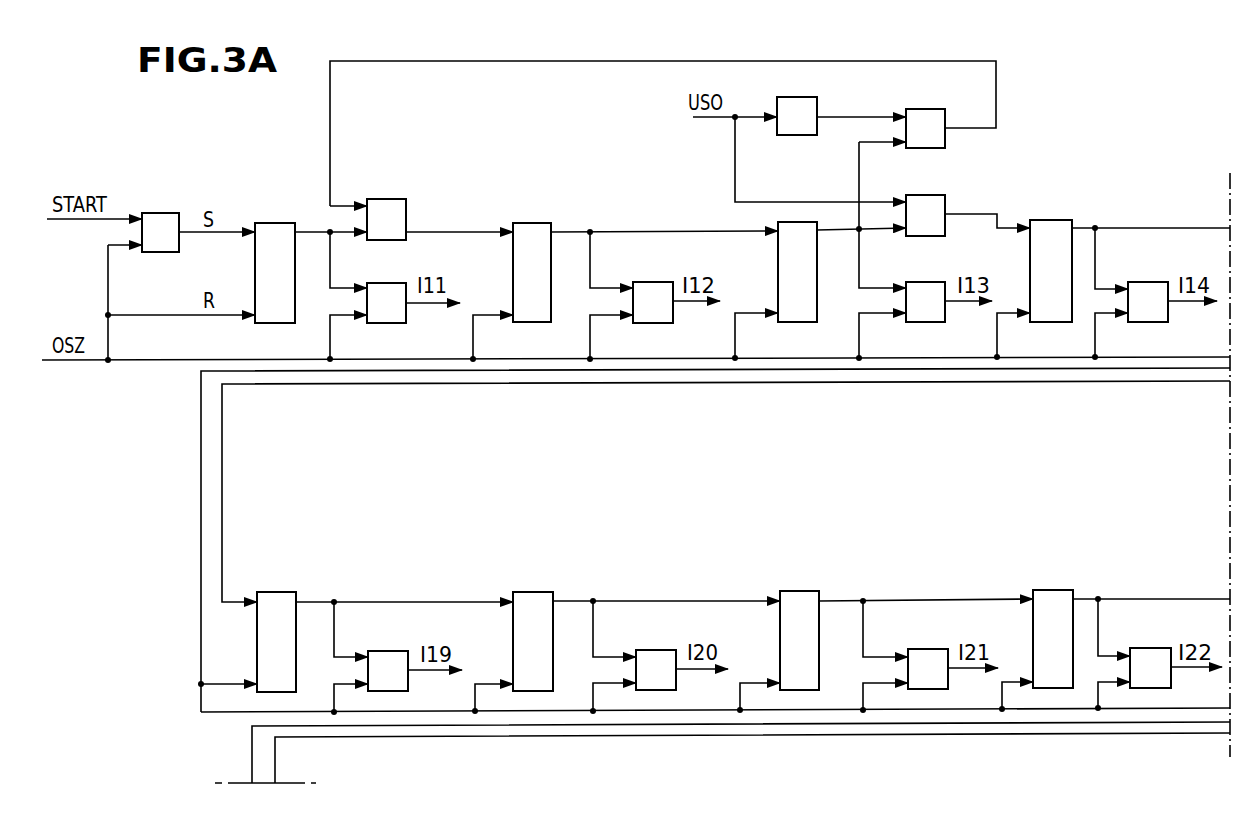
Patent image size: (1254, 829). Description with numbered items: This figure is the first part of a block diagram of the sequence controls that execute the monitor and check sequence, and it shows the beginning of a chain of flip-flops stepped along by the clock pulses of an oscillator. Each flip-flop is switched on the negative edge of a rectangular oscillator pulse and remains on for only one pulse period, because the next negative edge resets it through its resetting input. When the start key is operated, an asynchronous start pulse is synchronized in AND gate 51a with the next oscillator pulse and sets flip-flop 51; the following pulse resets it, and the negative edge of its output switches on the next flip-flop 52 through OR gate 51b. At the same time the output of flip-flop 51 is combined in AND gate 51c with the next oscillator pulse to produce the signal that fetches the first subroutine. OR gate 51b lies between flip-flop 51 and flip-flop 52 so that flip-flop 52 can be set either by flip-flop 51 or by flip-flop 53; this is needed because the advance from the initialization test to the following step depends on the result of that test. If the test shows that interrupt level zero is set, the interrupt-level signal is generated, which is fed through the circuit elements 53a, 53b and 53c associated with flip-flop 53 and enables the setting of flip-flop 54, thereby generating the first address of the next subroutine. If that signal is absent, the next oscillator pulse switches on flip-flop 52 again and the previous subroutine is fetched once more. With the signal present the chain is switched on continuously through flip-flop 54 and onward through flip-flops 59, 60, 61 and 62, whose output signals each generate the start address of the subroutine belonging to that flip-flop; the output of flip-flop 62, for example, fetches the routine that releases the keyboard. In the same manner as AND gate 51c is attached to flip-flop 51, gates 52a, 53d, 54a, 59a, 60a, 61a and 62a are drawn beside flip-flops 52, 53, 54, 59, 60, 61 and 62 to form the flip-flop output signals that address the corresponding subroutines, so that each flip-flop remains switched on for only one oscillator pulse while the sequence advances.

The flip-flop 51 is at (265, 313).
The AND gate 51a is at (172, 213).
The OR gate 51b is at (397, 199).
The AND gate 51c is at (398, 318).
The flip-flop 52 is at (538, 318).
The AND gate 52a is at (663, 322).
The flip-flop 53 is at (802, 317).
The inverter (NOT gate) 53a is at (813, 103).
The AND gate 53b is at (943, 140).
The AND gate 53c is at (935, 232).
The AND gate 53d is at (932, 313).
The flip-flop 54 is at (1053, 313).
The AND gate 54a is at (1155, 315).
The flip-flop 59 is at (282, 602).
The AND gate 59a is at (388, 651).
The flip-flop 60 is at (540, 598).
The AND gate 60a is at (653, 651).
The flip-flop 61 is at (805, 598).
The AND gate 61a is at (923, 648).
The flip-flop 62 is at (1062, 595).
The AND gate 62a is at (1153, 648).